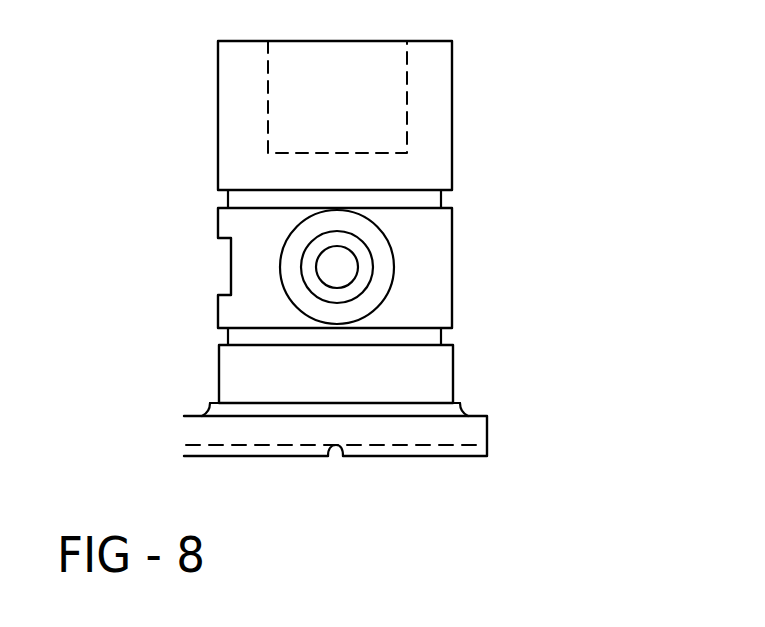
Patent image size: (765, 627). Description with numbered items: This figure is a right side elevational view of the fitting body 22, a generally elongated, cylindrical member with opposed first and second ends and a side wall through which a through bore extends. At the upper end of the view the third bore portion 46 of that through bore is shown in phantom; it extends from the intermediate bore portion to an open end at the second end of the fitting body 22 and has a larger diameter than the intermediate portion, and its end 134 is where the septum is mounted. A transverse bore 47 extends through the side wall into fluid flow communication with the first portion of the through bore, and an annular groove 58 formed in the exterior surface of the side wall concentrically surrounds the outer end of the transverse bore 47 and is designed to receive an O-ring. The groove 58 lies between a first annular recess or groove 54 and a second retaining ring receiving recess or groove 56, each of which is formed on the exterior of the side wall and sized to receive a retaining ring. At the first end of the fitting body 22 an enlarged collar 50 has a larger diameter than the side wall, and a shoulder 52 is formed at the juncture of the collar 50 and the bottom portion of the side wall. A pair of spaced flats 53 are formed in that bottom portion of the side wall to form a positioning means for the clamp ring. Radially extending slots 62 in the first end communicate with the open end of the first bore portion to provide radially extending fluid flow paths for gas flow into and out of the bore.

The fitting body 22 is at (486, 93).
The third bore portion 46 is at (268, 90).
The end of the third bore portion 134 is at (307, 153).
The second retaining ring receiving recess or groove 56 is at (443, 197).
The annular groove 58 is at (293, 238).
The transverse bore 47 is at (349, 272).
The first annular recess or groove 54 is at (445, 338).
The flats 53 is at (205, 413).
The shoulder 52 is at (487, 416).
The collar 50 is at (490, 440).
The slots 62 is at (338, 447).